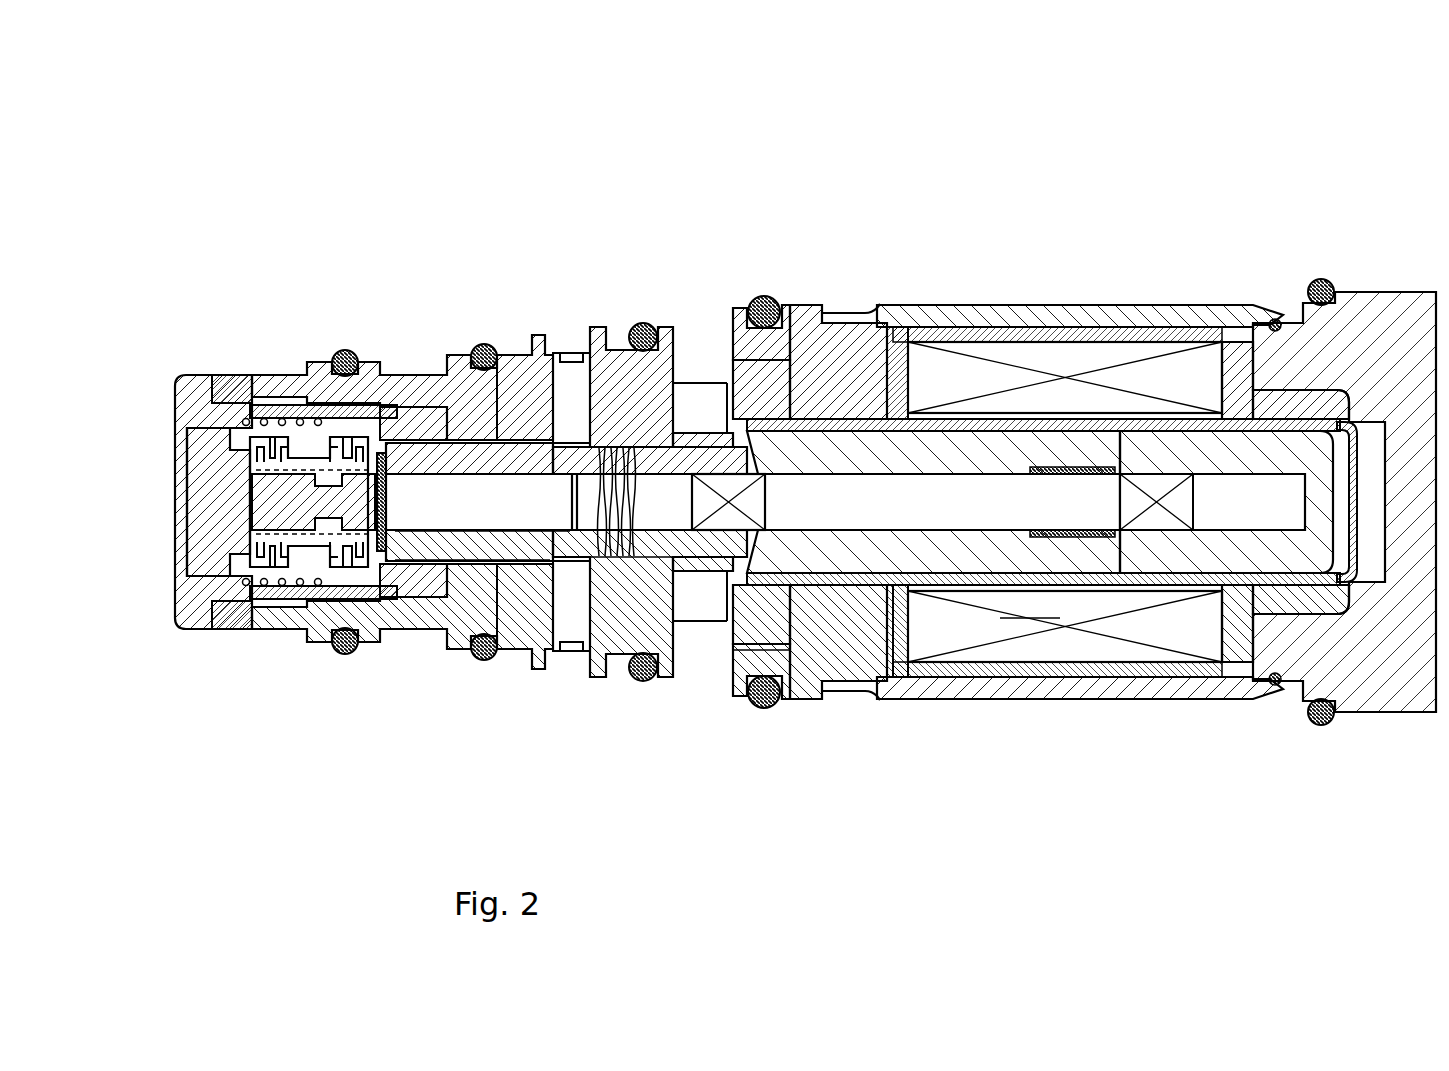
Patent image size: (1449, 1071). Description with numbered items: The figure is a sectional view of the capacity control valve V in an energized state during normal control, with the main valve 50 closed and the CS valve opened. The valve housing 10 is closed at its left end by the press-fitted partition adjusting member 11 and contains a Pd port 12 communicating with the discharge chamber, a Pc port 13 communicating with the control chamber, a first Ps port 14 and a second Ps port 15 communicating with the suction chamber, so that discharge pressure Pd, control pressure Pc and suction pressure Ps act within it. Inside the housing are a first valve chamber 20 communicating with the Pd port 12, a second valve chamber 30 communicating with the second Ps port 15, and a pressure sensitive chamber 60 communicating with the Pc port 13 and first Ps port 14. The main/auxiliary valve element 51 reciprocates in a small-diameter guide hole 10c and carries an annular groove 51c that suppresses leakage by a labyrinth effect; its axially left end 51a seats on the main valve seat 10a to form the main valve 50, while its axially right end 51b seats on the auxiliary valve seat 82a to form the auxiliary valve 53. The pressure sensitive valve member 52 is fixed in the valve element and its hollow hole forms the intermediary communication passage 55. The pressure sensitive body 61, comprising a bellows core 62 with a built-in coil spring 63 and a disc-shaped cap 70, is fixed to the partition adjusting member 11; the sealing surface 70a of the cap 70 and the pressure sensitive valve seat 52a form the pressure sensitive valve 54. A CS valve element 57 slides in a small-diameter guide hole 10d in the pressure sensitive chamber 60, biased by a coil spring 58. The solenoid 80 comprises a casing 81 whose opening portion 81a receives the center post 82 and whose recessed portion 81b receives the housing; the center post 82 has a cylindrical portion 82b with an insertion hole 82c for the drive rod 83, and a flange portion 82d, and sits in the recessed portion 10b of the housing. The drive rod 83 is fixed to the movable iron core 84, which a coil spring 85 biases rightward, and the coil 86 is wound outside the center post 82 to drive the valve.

The valve housing 10 is at (236, 372).
The partition adjusting member 11 is at (190, 408).
The first Ps port 14 is at (262, 392).
The coil spring 58 is at (292, 425).
The Pc port 13 is at (398, 408).
The pressure sensitive chamber 60 is at (430, 450).
The small-diameter guide hole 10d is at (338, 358).
The main valve seat 10a is at (515, 452).
The axially left end 51a is at (540, 455).
The main valve 50 is at (558, 172).
The Pd port 12 is at (542, 352).
The first valve chamber 20 is at (583, 460).
The annular groove 51c is at (626, 340).
The second Ps port 15 is at (672, 398).
The second valve chamber 30 is at (710, 398).
The auxiliary valve 53 is at (752, 172).
The axially right end 51b is at (752, 420).
The auxiliary valve seat 82a is at (808, 412).
The flange portion 82d is at (862, 372).
The insertion hole 82c is at (985, 492).
The cylindrical portion 82b is at (1060, 410).
The center post 82 is at (1087, 492).
The drive rod 83 is at (1190, 405).
The solenoid 80 is at (1245, 246).
The CS valve element 57 is at (215, 437).
The pressure sensitive body 61 is at (238, 626).
The bellows core 62 is at (283, 600).
The coil spring 63 is at (322, 565).
The cap 70 is at (366, 560).
The pressure sensitive valve seat 52a is at (400, 563).
The sealing surface 70a is at (440, 560).
The pressure sensitive valve 54 is at (480, 790).
The pressure sensitive valve member 52 is at (500, 560).
The intermediary communication passage 55 is at (573, 566).
The main/auxiliary valve element 51 is at (640, 590).
The small-diameter guide hole 10c is at (638, 678).
The recessed portion 10b is at (742, 650).
The casing 81 is at (738, 704).
The recessed portion 81b is at (788, 670).
The opening portion 81a is at (858, 684).
The coil spring 85 is at (1028, 552).
The coil 86 is at (1125, 622).
The movable iron core 84 is at (1258, 560).
The suction pressure Ps is at (278, 400).
The control pressure Pc is at (415, 392).
The discharge pressure Pd is at (577, 352).
The capacity control valve V is at (1392, 130).